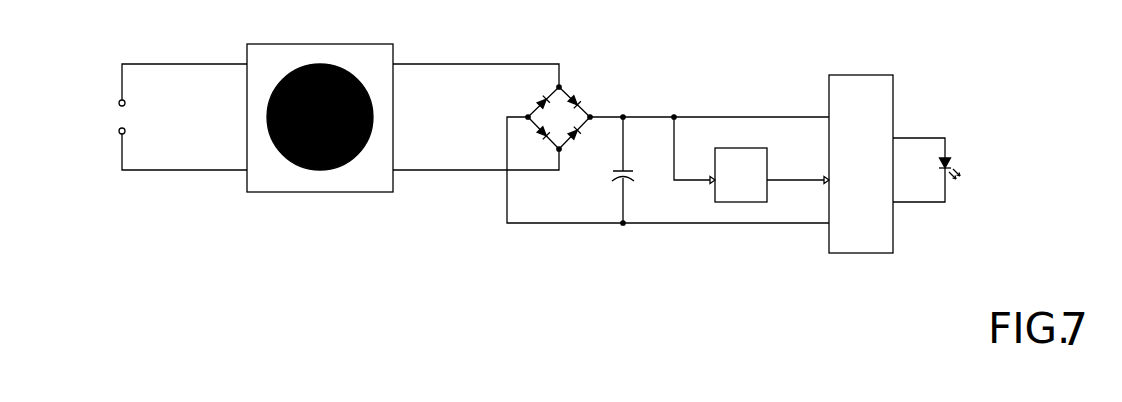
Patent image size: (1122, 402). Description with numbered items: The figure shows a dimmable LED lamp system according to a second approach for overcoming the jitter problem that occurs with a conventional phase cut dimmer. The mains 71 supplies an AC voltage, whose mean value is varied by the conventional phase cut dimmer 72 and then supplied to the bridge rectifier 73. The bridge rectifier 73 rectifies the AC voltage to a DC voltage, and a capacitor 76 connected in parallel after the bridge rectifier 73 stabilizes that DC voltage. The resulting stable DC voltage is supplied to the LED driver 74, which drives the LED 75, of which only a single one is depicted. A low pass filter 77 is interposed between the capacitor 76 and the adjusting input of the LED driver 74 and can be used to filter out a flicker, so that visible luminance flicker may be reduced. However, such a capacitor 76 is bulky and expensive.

The mains 71 is at (173, 117).
The phase cut dimmer 72 is at (320, 118).
The bridge rectifier 73 is at (562, 111).
The LED driver 74 is at (861, 164).
The LED 75 is at (926, 170).
The capacitor 76 is at (628, 170).
The low pass filter 77 is at (751, 159).